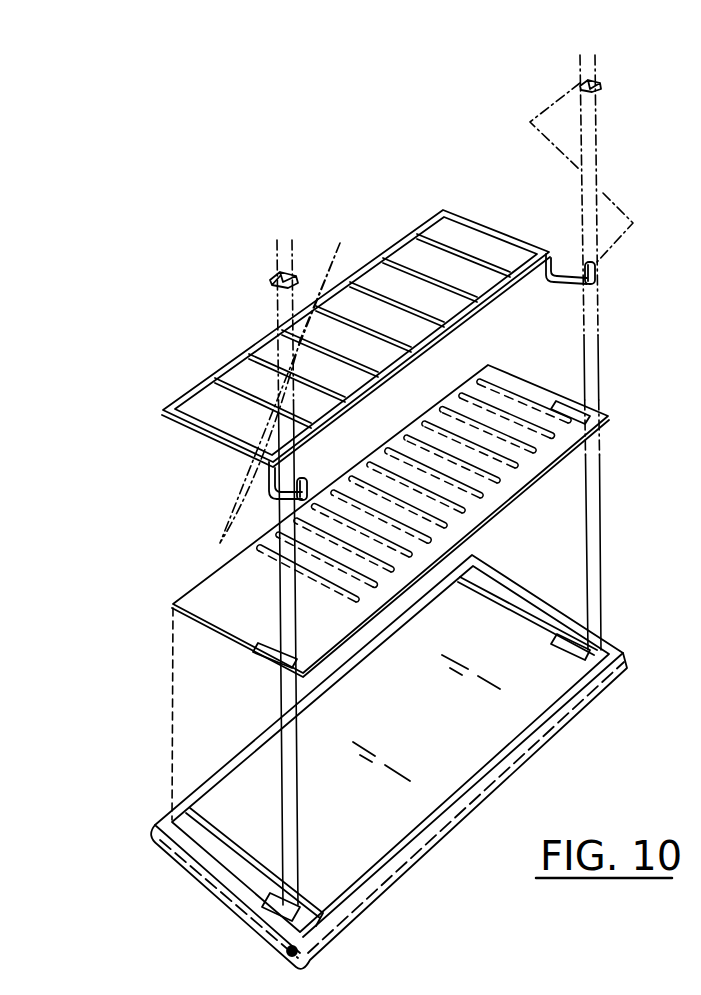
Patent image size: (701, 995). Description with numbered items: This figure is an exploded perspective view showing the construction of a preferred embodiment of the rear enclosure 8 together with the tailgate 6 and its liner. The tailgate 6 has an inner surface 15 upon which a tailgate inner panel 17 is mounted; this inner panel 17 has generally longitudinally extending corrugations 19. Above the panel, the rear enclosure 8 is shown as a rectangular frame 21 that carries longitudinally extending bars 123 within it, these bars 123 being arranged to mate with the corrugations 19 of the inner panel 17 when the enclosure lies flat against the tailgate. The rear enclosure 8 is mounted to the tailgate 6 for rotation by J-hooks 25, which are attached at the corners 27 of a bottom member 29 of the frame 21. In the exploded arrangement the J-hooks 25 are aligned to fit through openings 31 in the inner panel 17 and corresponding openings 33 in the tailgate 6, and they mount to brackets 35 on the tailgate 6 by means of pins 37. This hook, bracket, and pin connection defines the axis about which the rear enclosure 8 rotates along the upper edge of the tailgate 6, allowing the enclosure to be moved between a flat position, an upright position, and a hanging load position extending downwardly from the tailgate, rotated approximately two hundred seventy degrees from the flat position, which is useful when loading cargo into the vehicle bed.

The tailgate 6 is at (592, 716).
The rear enclosure 8 is at (214, 354).
The inner surface 15 is at (565, 681).
The tailgate inner panel 17 is at (560, 452).
The corrugations 19 is at (197, 600).
The frame 21 is at (477, 224).
The J-hooks 25 is at (567, 284).
The corners 27 is at (549, 252).
The bottom member 29 is at (428, 352).
The openings 31 is at (590, 410).
The openings 33 is at (575, 637).
The brackets 35 is at (285, 272).
The pins 37 is at (597, 267).
The bars 123 is at (432, 238).